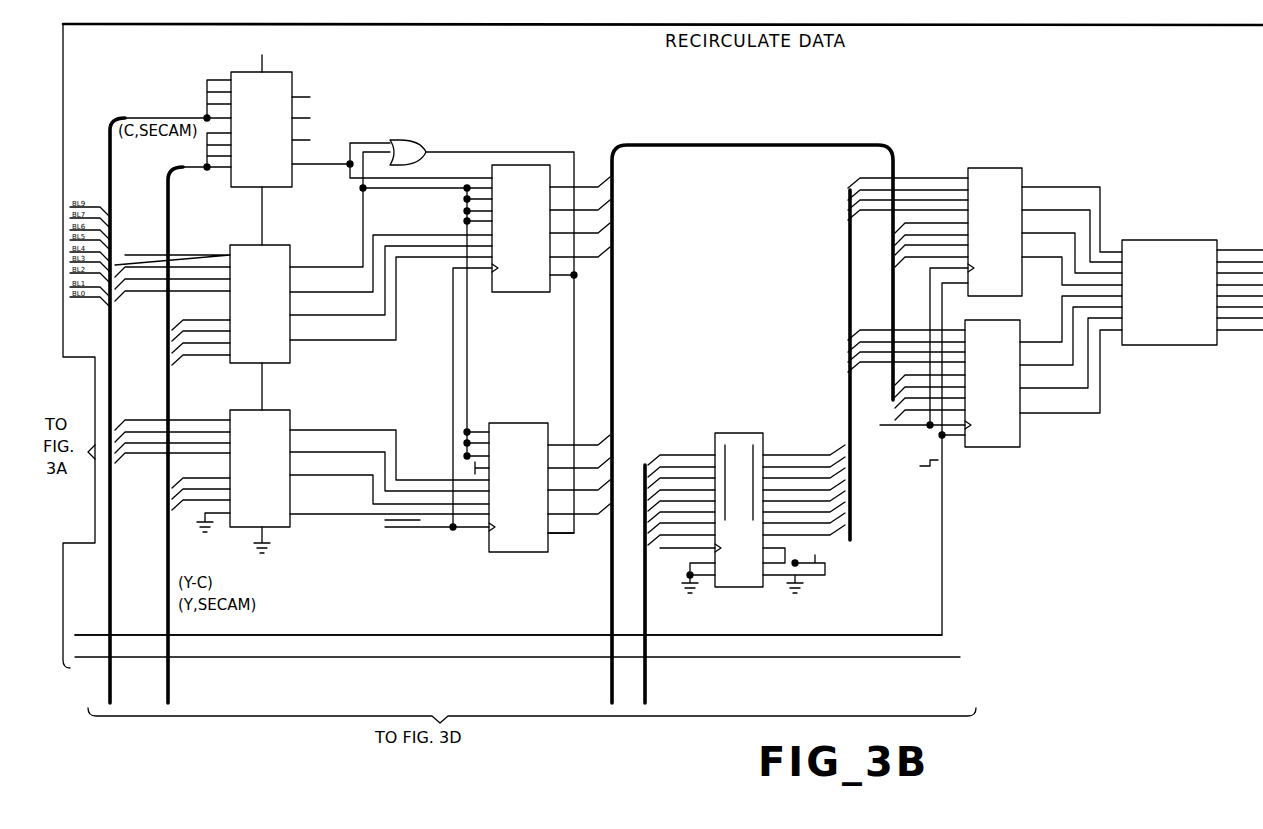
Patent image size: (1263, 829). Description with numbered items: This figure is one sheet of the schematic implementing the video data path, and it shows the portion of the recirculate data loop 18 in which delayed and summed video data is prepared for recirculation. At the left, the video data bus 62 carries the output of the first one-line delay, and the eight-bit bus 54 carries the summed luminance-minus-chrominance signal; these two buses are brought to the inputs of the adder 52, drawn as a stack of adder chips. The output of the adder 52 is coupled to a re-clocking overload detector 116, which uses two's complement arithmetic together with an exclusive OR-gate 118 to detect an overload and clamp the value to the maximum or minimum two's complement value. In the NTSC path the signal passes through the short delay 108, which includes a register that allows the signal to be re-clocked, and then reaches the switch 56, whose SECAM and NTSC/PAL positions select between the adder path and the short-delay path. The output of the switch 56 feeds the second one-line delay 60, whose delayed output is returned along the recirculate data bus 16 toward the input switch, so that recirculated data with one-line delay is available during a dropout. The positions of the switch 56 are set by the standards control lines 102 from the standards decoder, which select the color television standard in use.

The recirculate data bus 16 is at (495, 27).
The exclusive OR-gate 118 is at (406, 141).
The adder 52 is at (282, 190).
The re-clocking overload detector 116 is at (511, 312).
The recirculate data loop 18 is at (932, 137).
The short delay 108 is at (740, 433).
The switch 56 is at (1005, 320).
The 1H delay 60 is at (1173, 236).
The standards control lines 102 is at (87, 634).
The video data bus 62 is at (112, 688).
The 8-bit bus 54 is at (170, 688).